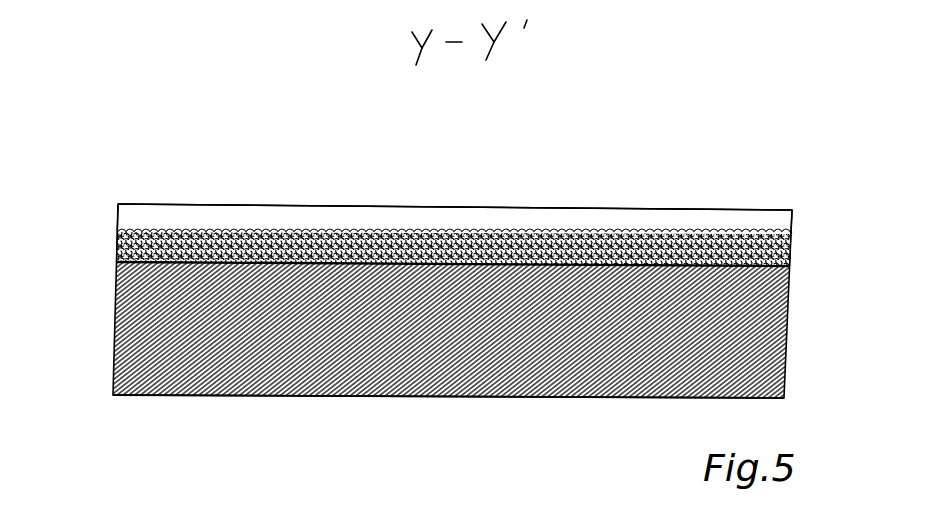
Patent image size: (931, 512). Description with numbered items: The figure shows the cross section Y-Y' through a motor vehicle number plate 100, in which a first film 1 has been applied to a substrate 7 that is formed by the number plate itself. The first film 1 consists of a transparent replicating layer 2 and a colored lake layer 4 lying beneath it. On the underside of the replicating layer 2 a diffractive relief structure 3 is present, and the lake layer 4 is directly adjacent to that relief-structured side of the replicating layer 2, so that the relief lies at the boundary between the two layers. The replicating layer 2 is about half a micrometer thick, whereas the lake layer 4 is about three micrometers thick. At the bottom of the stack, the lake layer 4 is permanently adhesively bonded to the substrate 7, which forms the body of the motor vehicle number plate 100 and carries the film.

The motor vehicle number plate 100 is at (666, 192).
The first film 1 is at (794, 211).
The transparent replicating layer 2 is at (133, 216).
The diffractive relief structure 3 is at (293, 232).
The colored lake layer 4 is at (133, 250).
The substrate 7 is at (140, 328).